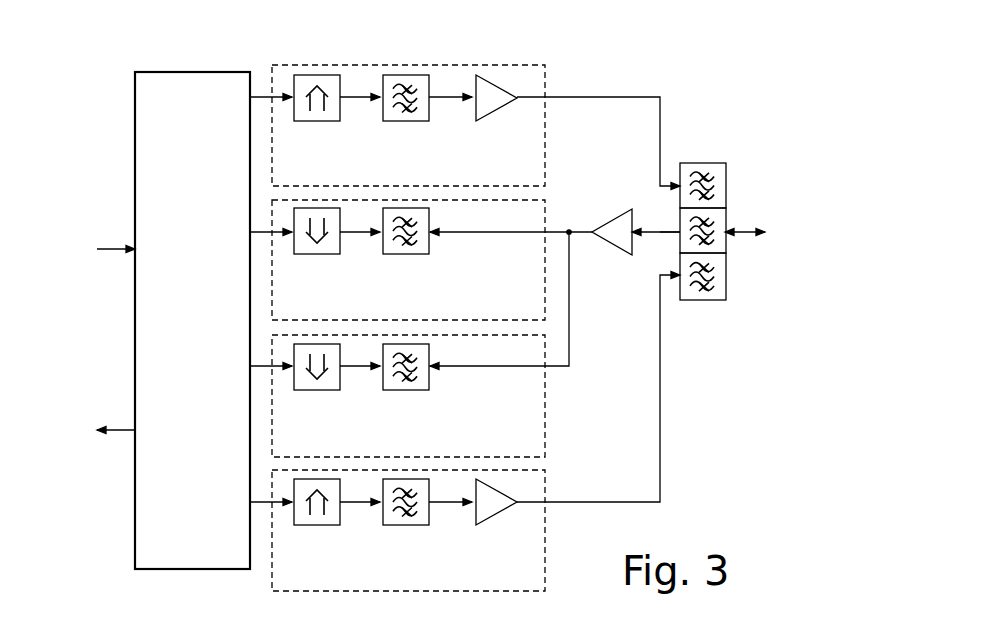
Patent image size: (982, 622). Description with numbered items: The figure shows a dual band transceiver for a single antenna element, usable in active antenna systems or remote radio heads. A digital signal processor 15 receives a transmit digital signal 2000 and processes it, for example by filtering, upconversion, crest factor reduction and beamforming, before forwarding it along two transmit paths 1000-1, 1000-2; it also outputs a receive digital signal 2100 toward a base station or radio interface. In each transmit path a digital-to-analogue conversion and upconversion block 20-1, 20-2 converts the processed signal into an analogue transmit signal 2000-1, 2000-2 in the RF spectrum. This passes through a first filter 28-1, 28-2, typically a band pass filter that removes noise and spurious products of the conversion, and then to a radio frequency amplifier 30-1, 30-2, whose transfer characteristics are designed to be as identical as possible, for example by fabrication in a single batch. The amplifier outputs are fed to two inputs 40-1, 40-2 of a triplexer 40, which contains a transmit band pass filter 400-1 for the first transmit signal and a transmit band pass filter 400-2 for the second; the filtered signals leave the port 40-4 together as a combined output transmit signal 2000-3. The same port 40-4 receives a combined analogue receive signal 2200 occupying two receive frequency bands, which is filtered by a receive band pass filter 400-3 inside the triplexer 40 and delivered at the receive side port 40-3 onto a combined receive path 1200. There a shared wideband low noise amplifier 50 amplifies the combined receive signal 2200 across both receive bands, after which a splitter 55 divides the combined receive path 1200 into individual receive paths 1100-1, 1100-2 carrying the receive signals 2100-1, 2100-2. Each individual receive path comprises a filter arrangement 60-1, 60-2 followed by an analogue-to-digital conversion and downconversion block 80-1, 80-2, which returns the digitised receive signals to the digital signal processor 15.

The digital signal processor 15 is at (150, 99).
The digital-to-analogue conversion and upconversion block 20-1 is at (310, 75).
The digital-to-analogue conversion and upconversion block 20-2 is at (333, 527).
The first filter 28-1 is at (406, 75).
The first filter 28-2 is at (420, 527).
The radio frequency amplifier 30-1 is at (502, 92).
The radio frequency amplifier 30-2 is at (510, 512).
The triplexer 40 is at (761, 261).
The input of the triplexer 40-1 is at (676, 181).
The input of the triplexer 40-2 is at (680, 280).
The third filter port 40-3 is at (678, 229).
The port of the triplexer 40-4 is at (728, 230).
The transmit band pass filter 400-1 is at (702, 188).
The transmit band pass filter 400-2 is at (720, 283).
The receive band pass filter 400-3 is at (720, 240).
The amplifier 50 is at (610, 246).
The splitter 55 is at (567, 236).
The filter arrangement 60-1 is at (400, 255).
The filter arrangement 60-2 is at (418, 392).
The analogue-to-digital conversion and downconversion block 80-1 is at (333, 255).
The analogue-to-digital conversion and downconversion block 80-2 is at (325, 392).
The transmit path 1000-1 is at (600, 96).
The transmit path 1000-2 is at (661, 442).
The receive path 1100-1 is at (477, 230).
The receive path 1100-2 is at (527, 368).
The combined receive path 1200 is at (655, 240).
The transmit digital signal 2000 is at (90, 251).
The analogue transmit signal 2000-1 is at (266, 96).
The analogue transmit signal 2000-2 is at (262, 508).
The combined output transmit signal 2000-3 is at (784, 229).
The receive digital signal 2100 is at (90, 433).
The receive signal 2100-1 is at (258, 236).
The receive signal 2100-2 is at (258, 372).
The combined analogue receive signal 2200 is at (801, 251).